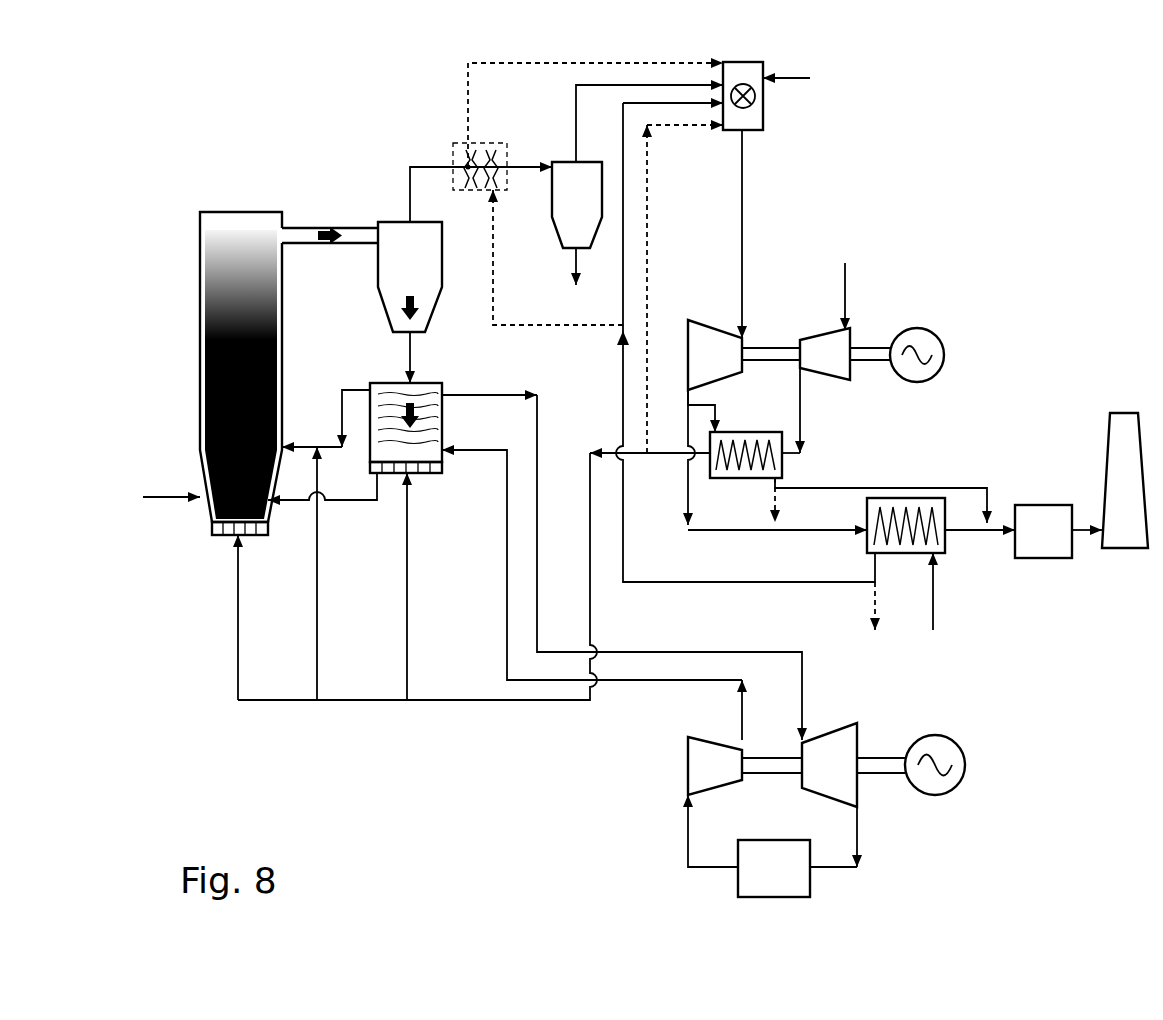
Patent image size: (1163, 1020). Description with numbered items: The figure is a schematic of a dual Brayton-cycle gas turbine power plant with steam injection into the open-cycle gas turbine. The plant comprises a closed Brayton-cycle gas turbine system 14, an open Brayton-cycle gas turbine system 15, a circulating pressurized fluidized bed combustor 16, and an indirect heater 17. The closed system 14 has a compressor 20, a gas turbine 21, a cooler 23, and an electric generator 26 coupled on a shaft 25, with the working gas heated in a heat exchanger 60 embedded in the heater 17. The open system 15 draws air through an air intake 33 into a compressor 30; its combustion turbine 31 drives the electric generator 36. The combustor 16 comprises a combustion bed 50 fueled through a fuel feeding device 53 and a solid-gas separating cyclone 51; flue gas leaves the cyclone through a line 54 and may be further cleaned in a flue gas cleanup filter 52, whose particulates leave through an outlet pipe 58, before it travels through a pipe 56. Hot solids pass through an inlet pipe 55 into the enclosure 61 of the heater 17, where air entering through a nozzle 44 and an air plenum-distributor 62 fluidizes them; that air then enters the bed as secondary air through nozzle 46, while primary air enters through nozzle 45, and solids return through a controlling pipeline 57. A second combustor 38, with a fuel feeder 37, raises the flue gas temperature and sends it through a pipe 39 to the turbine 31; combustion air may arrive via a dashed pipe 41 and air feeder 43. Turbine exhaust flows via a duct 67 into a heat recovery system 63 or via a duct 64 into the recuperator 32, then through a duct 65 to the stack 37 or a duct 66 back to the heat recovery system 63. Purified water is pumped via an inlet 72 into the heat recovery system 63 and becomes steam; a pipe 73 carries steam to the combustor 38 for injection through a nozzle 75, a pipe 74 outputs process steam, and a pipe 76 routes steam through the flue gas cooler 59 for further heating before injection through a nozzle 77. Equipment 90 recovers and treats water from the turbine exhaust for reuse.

The closed Brayton-cycle gas turbine system 14 is at (703, 652).
The open Brayton-cycle gas turbine system 15 is at (880, 337).
The circulating pressurized fluidized bed combustor 16 is at (217, 420).
The indirect heater 17 is at (404, 420).
The compressor 20 is at (712, 790).
The gas turbine 21 is at (814, 793).
The cooler 23 is at (735, 886).
The shaft 25 is at (870, 758).
The electric generator 26 is at (922, 795).
The compressor 30 is at (830, 379).
The combustion turbine 31 is at (720, 320).
The recuperator 32 is at (738, 479).
The air intake 33 is at (855, 290).
The electric generator 36 is at (936, 333).
The stack 37 is at (788, 76).
The second combustor 38 is at (766, 118).
The pipe 39 is at (745, 201).
The pipe 41 is at (651, 249).
The air feeder 43 is at (678, 131).
The nozzle 44 is at (400, 491).
The nozzle 45 is at (232, 552).
The nozzle 46 is at (298, 436).
The combustion bed 50 is at (200, 322).
The solid-gas separating cyclone 51 is at (378, 283).
The flue gas cleanup filter 52 is at (576, 160).
The fuel feeding device 53 is at (175, 492).
The product gas line 54 is at (405, 181).
The inlet pipe 55 is at (398, 363).
The pipe 56 is at (565, 123).
The controlling pipeline 57 is at (352, 506).
The outlet pipe 58 is at (570, 258).
The flue gas cooler 59 is at (452, 146).
The heat exchanger 60 is at (390, 388).
The enclosure 61 is at (368, 441).
The air plenum-distributor 62 is at (424, 479).
The heat recovery system 63 is at (948, 545).
The duct 64 is at (722, 412).
The duct 65 is at (848, 487).
The duct 66 is at (778, 494).
The duct 67 is at (685, 471).
The inlet 72 is at (938, 590).
The pipe 73 is at (733, 583).
The pipe 74 is at (868, 601).
The nozzle 75 is at (702, 102).
The pipe 76 is at (562, 328).
The nozzle 77 is at (640, 62).
The equipment 90 is at (1062, 559).